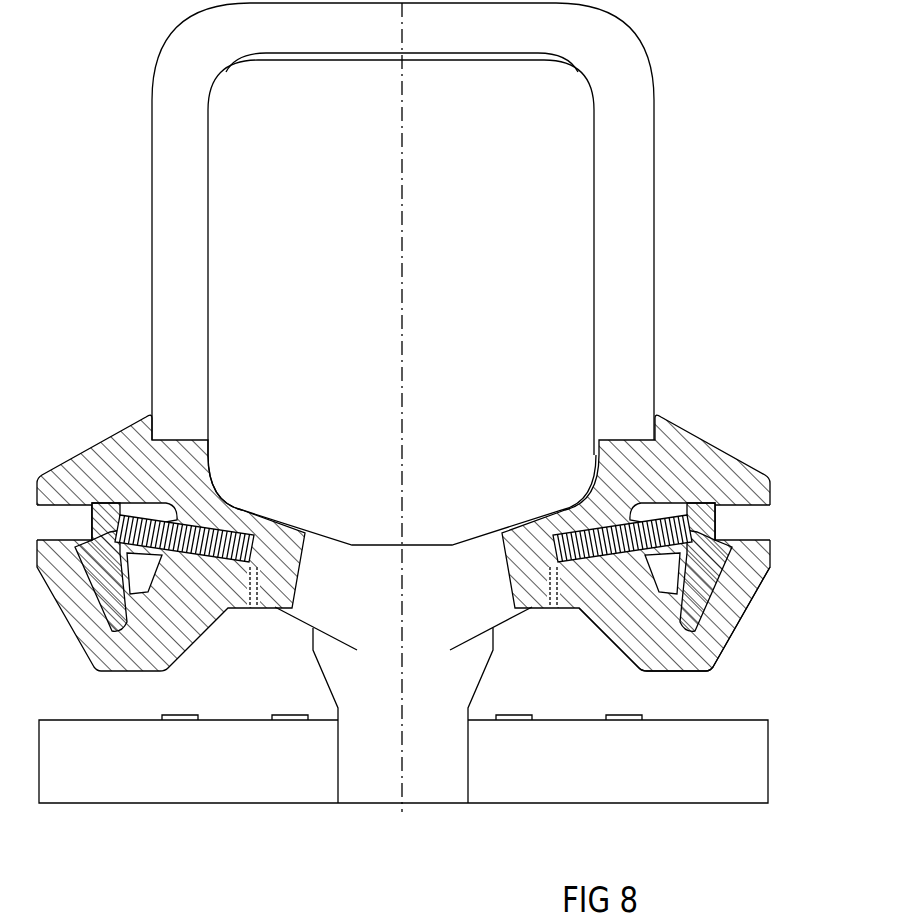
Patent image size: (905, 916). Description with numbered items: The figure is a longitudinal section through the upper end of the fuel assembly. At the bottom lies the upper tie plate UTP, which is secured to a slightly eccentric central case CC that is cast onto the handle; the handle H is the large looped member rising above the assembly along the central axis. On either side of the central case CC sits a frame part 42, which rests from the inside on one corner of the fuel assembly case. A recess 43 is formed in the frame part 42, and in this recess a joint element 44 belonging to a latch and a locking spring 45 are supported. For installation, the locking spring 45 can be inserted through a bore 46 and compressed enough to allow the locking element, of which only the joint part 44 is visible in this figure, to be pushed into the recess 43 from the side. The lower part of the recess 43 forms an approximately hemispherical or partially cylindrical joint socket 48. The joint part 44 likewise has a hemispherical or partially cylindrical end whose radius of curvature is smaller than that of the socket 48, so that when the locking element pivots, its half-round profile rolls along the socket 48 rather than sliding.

The frame part 42 is at (732, 470).
The recess 43 is at (662, 567).
The joint element 44 is at (710, 580).
The locking spring 45 is at (572, 522).
The bore 46 is at (752, 518).
The joint socket 48 is at (708, 655).
The hood H is at (195, 240).
The central case CC is at (435, 783).
The upper tie plate UTP is at (703, 780).